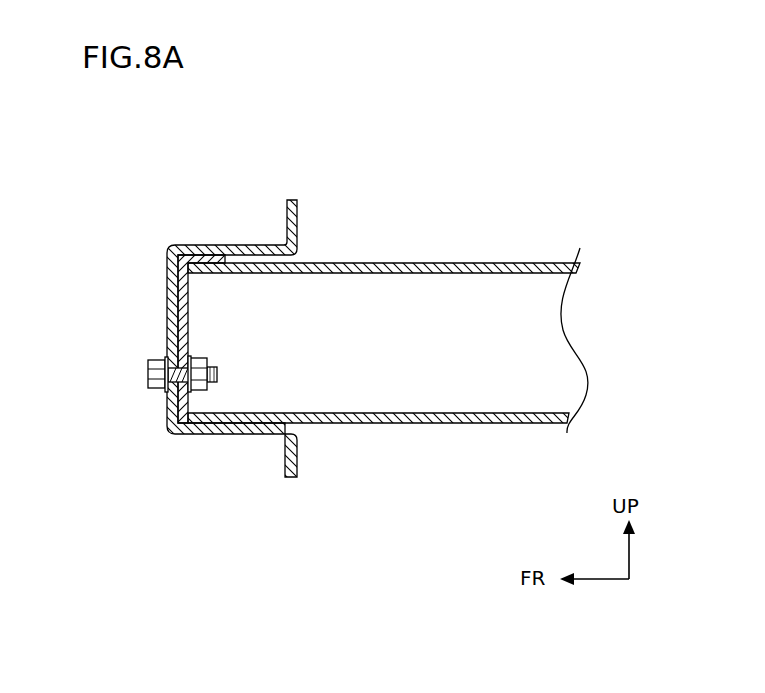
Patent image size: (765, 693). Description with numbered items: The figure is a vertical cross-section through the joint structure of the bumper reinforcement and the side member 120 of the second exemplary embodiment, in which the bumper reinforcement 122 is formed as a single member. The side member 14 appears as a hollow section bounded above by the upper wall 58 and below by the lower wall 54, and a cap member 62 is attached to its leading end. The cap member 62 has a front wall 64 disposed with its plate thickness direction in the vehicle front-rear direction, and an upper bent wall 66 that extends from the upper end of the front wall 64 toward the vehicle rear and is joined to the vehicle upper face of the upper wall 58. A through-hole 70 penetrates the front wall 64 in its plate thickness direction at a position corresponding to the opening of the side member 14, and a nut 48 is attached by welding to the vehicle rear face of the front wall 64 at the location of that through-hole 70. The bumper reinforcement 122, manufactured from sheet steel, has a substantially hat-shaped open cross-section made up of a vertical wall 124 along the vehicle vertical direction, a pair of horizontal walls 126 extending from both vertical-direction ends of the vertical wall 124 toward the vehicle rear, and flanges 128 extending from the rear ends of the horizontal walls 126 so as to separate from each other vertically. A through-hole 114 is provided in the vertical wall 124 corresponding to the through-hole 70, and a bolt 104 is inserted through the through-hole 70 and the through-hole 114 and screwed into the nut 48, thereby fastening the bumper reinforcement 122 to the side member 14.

The side member 14 is at (388, 326).
The nut 48 is at (193, 361).
The lower wall 54 is at (458, 423).
The upper wall 58 is at (418, 262).
The cap member 62 is at (191, 298).
The front wall 64 is at (191, 330).
The upper bent wall 66 is at (207, 252).
The through-hole 70 is at (192, 380).
The bolt 104 is at (158, 362).
The through-hole 114 is at (150, 378).
The joint structure of the bumper reinforcement and the side member 120 is at (316, 146).
The bumper reinforcement 122 is at (285, 208).
The vertical wall 124 is at (167, 267).
The horizontal wall 126 is at (247, 247).
The flange 128 is at (298, 218).